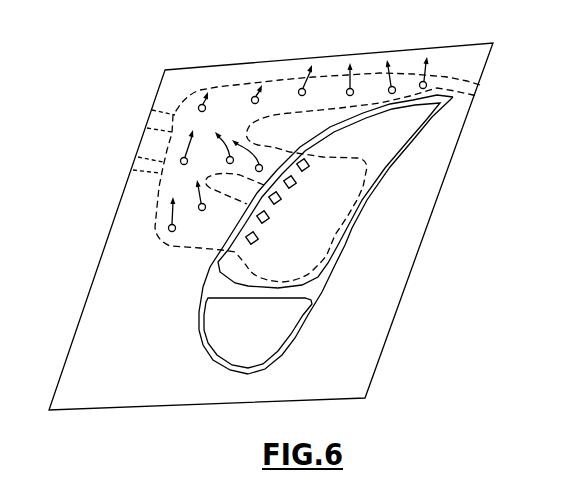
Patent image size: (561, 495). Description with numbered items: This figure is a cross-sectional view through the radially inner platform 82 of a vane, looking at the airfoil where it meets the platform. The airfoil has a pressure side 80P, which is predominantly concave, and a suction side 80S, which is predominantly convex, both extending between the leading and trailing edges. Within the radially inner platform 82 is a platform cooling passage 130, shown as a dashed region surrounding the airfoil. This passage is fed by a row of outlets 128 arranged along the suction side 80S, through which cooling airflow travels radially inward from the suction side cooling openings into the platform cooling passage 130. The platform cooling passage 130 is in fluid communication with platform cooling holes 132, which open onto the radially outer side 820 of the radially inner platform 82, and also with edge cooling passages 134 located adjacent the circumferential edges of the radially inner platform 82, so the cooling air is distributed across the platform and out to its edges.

The radially inner platform 82 is at (373, 383).
The radially outer side 820 is at (355, 342).
The suction side 80S is at (215, 266).
The pressure side 80P is at (343, 254).
The platform cooling passage 130 is at (187, 249).
The platform cooling holes 132 is at (244, 83).
The edge cooling passages 134 is at (483, 104).
The outlets 128 is at (270, 242).